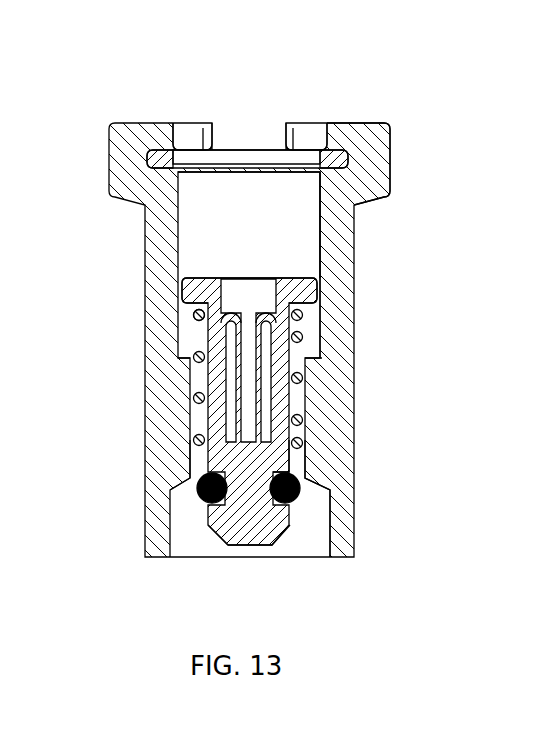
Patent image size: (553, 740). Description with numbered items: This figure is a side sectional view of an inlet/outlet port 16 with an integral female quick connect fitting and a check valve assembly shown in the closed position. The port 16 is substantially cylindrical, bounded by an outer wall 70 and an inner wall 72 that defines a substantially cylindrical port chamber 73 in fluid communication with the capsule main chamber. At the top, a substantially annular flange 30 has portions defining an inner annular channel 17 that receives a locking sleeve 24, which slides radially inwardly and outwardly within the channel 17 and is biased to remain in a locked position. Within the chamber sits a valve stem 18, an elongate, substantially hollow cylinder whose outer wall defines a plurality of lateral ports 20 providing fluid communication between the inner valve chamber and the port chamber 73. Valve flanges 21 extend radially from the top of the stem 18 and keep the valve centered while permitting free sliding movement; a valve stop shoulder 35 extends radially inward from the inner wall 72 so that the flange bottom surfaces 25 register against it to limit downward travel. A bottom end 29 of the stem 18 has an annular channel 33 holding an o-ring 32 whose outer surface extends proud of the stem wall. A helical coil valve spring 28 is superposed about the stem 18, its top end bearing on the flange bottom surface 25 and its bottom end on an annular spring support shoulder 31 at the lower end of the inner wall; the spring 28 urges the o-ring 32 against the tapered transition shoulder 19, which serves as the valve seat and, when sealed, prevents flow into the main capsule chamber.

The port 16 is at (350, 70).
The inner annular channel 17 is at (364, 172).
The valve stem 18 is at (200, 268).
The transition shoulder 19 is at (318, 481).
The lateral ports 20 is at (230, 378).
The valve flanges 21 is at (308, 297).
The locking sleeve 24 is at (228, 162).
The flange bottom surface 25 is at (198, 315).
The valve spring 28 is at (297, 451).
The bottom end 29 is at (265, 540).
The annular flange 30 is at (367, 175).
The spring support shoulder 31 is at (193, 450).
The o-ring 32 is at (300, 494).
The annular channel 33 is at (231, 543).
The valve stop shoulder 35 is at (180, 362).
The outer wall 70 is at (146, 283).
The inner wall 72 is at (318, 240).
The port chamber 73 is at (261, 200).